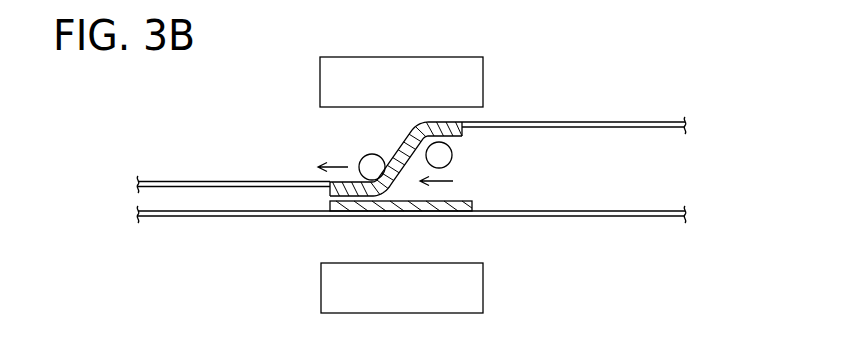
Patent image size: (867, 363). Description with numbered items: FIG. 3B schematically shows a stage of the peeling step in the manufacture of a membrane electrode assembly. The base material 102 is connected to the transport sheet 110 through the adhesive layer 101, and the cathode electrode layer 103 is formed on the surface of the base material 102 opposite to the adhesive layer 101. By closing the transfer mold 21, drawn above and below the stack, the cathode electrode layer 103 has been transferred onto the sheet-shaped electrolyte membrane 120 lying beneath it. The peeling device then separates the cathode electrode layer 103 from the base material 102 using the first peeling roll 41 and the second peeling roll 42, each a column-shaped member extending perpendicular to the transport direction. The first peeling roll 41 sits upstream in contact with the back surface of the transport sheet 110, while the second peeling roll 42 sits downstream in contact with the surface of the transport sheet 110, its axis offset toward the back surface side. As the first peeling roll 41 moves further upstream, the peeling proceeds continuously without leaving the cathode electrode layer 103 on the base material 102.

The transfer mold 21 is at (333, 78).
The first peeling roll 41 is at (375, 165).
The second peeling roll 42 is at (452, 155).
The adhesive layer 101 is at (337, 193).
The base material 102 is at (460, 138).
The cathode electrode layer 103 is at (478, 209).
The transport sheet 110 is at (651, 122).
The electrolyte membrane 120 is at (653, 219).